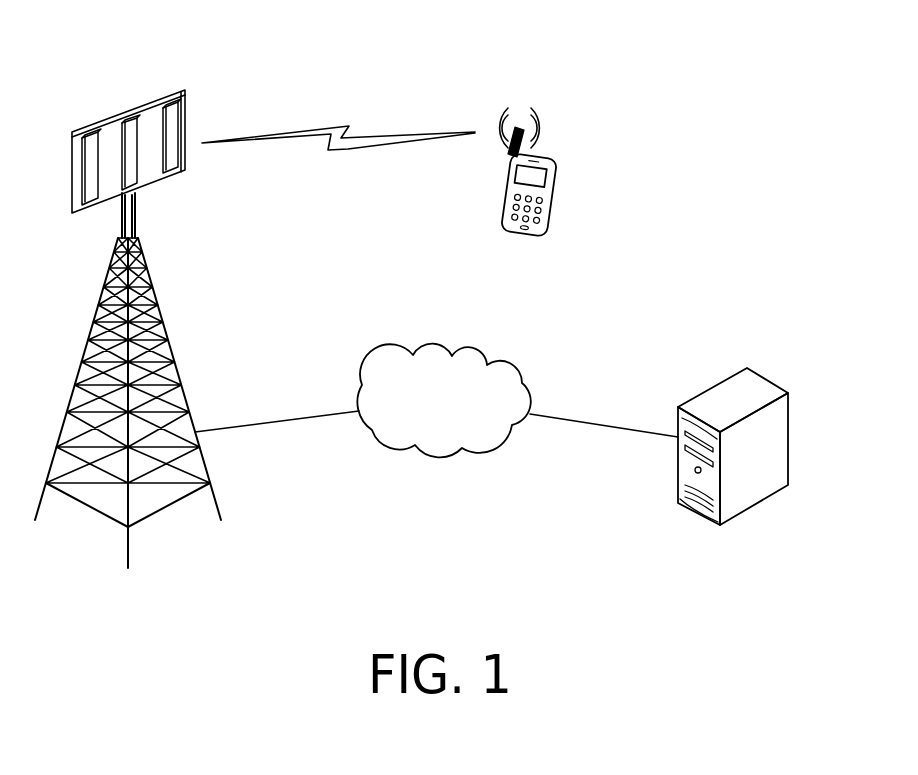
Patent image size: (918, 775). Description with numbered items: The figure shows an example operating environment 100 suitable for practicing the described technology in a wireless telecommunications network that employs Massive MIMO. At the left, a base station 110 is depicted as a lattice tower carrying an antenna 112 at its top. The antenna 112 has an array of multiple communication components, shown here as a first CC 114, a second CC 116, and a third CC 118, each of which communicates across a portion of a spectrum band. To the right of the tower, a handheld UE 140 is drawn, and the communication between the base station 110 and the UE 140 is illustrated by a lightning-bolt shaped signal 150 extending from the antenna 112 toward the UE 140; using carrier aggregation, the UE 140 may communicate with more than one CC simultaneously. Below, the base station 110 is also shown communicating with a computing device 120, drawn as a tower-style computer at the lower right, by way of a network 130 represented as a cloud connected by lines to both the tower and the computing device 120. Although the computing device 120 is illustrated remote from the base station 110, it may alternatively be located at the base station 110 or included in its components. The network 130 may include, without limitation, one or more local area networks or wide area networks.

The operating environment 100 is at (806, 113).
The base station 110 is at (98, 313).
The antenna 112 is at (155, 183).
The first CC 114 is at (82, 150).
The second CC 116 is at (130, 118).
The third CC 118 is at (186, 111).
The computing device 120 is at (712, 385).
The network 130 is at (410, 343).
The UE 140 is at (562, 185).
The signal 150 is at (354, 150).